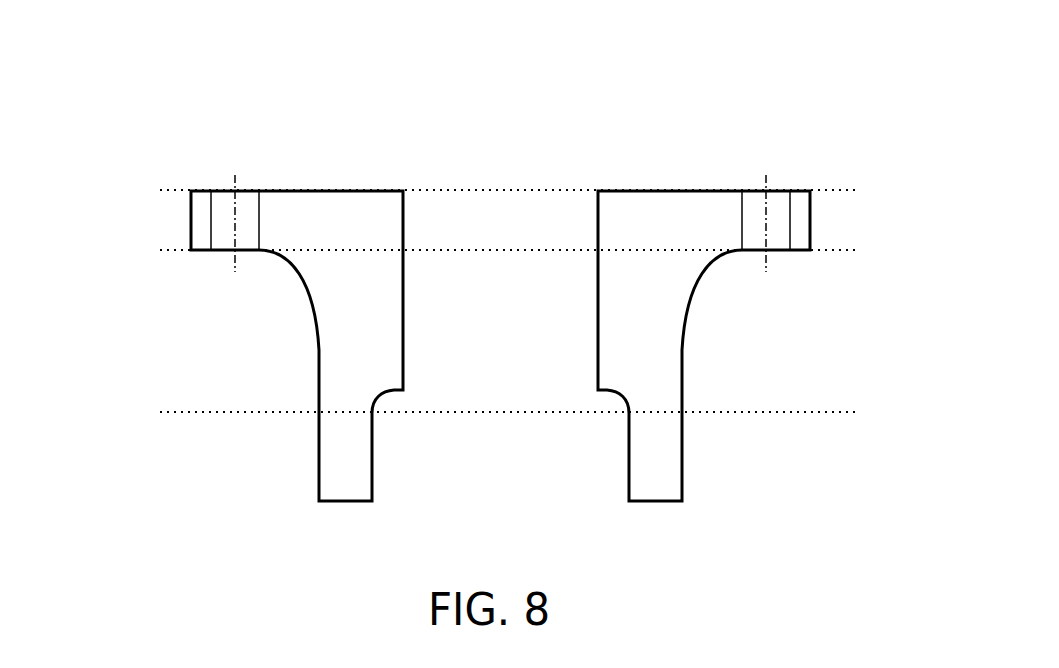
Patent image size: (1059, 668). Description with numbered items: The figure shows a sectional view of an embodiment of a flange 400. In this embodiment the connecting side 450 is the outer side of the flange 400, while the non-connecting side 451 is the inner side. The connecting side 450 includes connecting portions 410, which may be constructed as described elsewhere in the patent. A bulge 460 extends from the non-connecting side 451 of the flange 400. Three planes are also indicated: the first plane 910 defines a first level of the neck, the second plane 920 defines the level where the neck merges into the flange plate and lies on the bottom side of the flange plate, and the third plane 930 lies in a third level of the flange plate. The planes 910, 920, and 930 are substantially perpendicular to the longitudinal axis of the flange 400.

The flange 400 is at (438, 270).
The connecting portions 410 is at (248, 190).
The connecting side 450 is at (162, 227).
The non-connecting side 451 is at (470, 226).
The bulge 460 is at (406, 337).
The first plane 910 is at (546, 406).
The second plane 920 is at (545, 250).
The third plane 930 is at (541, 191).